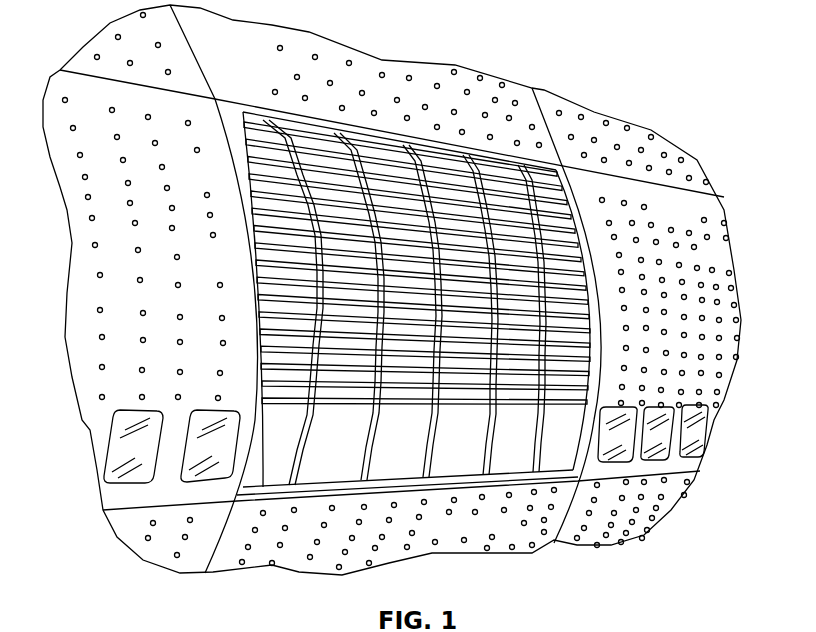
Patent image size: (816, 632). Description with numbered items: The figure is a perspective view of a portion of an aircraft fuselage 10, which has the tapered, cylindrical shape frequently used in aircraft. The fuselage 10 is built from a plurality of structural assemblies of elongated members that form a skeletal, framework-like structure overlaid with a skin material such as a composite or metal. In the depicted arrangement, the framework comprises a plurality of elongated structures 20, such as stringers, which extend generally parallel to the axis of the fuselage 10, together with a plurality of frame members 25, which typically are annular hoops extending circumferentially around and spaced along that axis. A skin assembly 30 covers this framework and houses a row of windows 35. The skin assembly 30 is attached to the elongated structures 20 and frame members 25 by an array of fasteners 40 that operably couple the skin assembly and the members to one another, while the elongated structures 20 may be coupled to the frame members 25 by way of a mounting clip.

The aircraft fuselage 10 is at (716, 96).
The elongated structures 20 is at (590, 255).
The frame members 25 is at (500, 158).
The skin assembly 30 is at (728, 280).
The windows 35 is at (133, 450).
The fasteners 40 is at (553, 543).